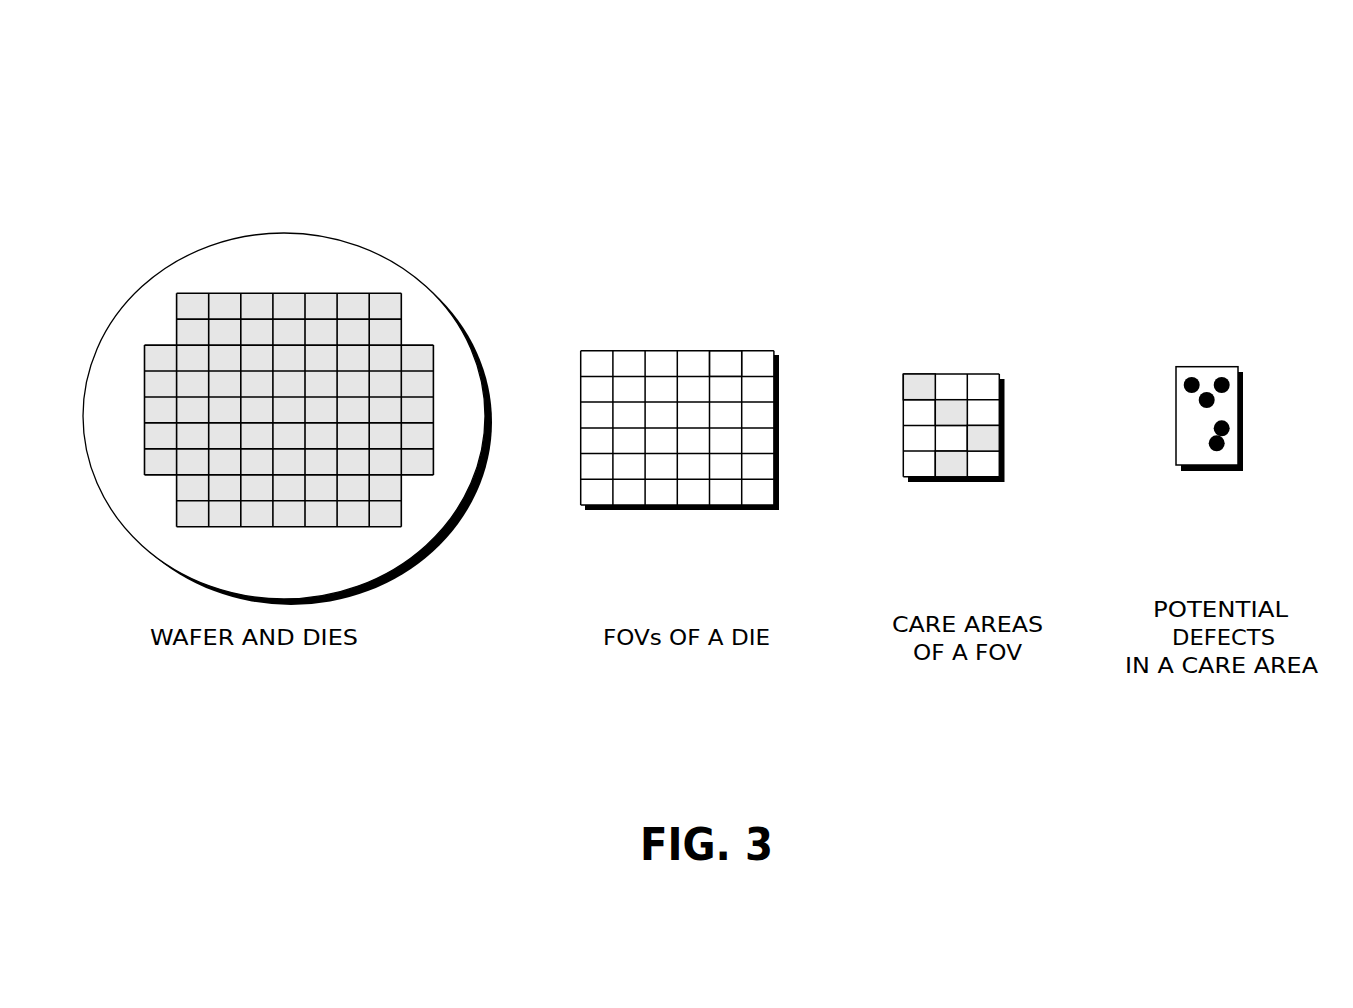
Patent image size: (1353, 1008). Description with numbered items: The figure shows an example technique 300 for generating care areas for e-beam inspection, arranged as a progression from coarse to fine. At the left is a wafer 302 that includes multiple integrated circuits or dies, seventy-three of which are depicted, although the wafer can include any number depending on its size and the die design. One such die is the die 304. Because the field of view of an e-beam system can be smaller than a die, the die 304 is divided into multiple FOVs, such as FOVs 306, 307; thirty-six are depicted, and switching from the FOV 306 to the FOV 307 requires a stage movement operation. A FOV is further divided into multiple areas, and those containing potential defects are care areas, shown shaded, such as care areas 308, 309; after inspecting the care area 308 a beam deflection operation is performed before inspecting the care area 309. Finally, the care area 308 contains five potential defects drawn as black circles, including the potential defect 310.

The technique 300 is at (700, 333).
The wafer 302 is at (307, 232).
The die 304 is at (553, 277).
The FOV 306 is at (873, 348).
The FOV 307 is at (628, 362).
The care area 308 is at (920, 383).
The care area 309 is at (995, 437).
The potential defect 310 is at (1193, 373).